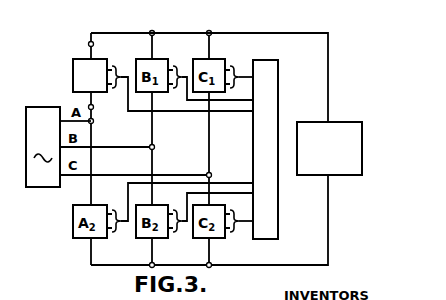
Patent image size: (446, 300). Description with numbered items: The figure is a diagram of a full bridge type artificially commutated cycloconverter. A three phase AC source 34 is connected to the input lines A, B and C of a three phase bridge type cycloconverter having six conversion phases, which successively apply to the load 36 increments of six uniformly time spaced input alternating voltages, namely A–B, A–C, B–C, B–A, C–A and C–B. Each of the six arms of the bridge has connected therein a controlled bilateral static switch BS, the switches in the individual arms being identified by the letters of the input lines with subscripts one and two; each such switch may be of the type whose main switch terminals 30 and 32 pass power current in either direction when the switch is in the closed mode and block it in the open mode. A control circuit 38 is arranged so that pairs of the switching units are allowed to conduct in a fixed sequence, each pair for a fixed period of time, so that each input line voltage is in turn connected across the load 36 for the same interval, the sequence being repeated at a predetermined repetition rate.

The main switch terminal 30 is at (89, 44).
The main switch terminal 32 is at (88, 105).
The three phase AC source 34 is at (42, 106).
The load 36 is at (319, 121).
The control circuit 38 is at (271, 60).
The controlled bilateral static switch BS is at (137, 60).